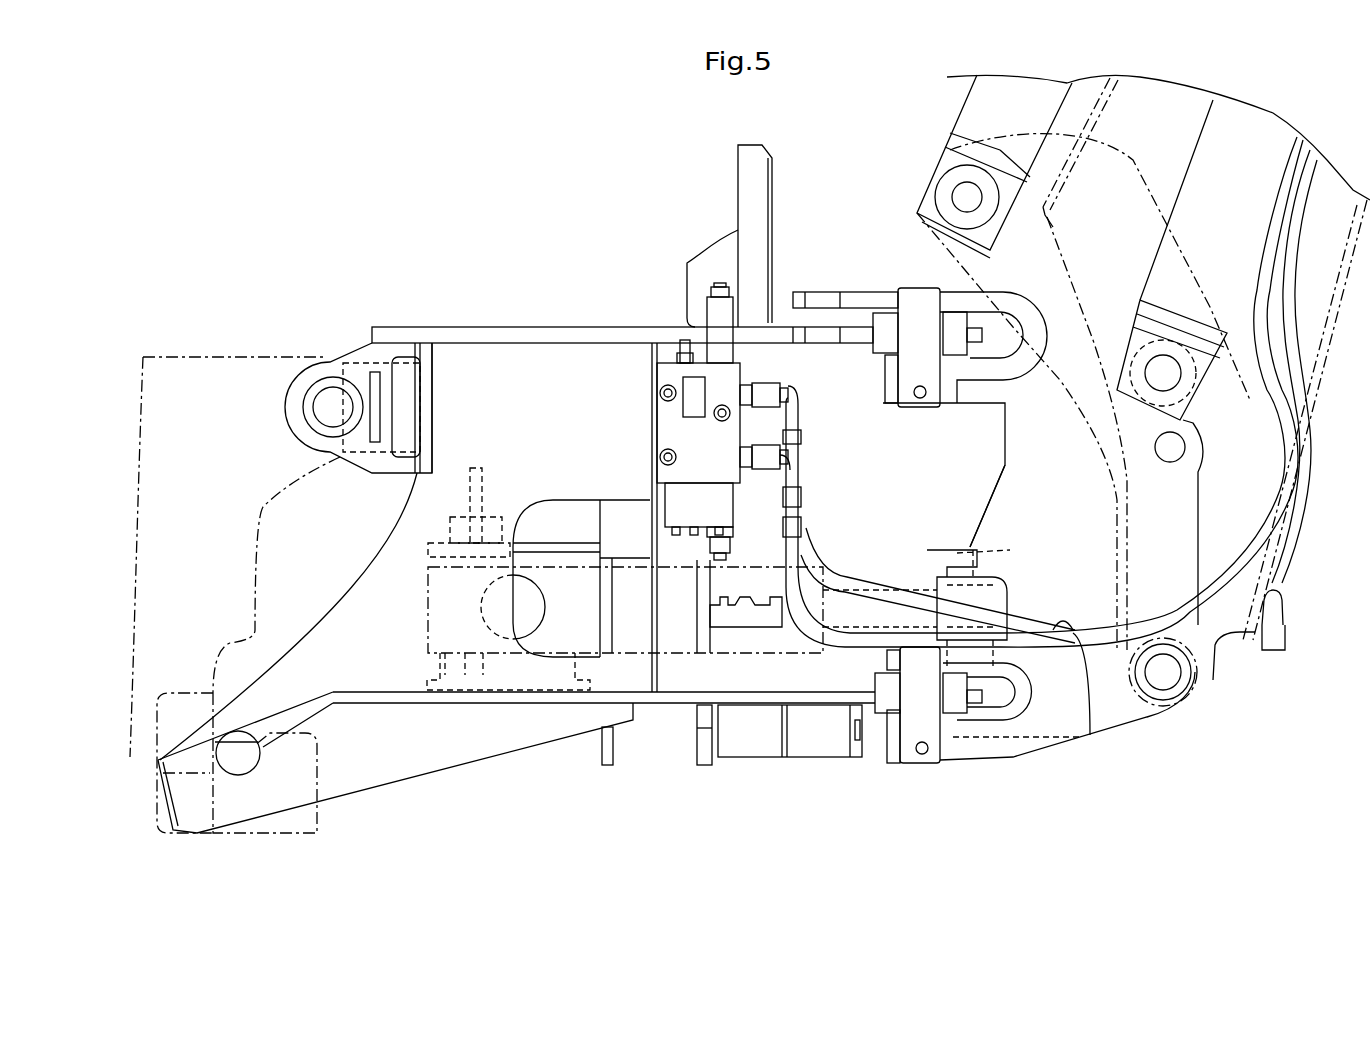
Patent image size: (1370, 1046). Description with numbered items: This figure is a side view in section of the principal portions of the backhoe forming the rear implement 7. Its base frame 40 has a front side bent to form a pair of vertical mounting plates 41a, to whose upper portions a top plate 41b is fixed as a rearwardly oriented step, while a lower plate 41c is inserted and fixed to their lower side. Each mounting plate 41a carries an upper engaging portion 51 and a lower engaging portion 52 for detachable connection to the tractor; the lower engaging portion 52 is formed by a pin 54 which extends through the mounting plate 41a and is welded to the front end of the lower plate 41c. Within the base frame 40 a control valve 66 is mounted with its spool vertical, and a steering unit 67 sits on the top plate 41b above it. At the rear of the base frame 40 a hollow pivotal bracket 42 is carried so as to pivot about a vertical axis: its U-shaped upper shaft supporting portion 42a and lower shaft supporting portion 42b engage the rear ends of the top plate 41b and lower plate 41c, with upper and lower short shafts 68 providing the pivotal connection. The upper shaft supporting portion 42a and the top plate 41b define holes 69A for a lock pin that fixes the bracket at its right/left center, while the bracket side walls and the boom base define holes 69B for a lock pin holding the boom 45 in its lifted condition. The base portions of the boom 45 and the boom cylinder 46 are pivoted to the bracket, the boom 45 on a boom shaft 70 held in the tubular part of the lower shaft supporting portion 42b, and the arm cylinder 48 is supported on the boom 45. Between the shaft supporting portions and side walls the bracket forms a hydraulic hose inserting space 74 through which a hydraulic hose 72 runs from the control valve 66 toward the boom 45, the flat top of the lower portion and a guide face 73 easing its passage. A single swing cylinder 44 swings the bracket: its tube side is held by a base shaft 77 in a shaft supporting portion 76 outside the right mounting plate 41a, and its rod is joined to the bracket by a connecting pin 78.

The rear implement 7 is at (744, 213).
The base frame 40 is at (565, 764).
The mounting plates 41a is at (452, 363).
The top plate 41b is at (505, 333).
The lower plate 41c is at (403, 700).
The pivotal bracket 42 is at (1006, 559).
The upper shaft supporting portion 42a is at (1013, 367).
The lower shaft supporting portion 42b is at (1072, 713).
The swing cylinder 44 is at (753, 653).
The boom 45 is at (1270, 660).
The boom cylinder 46 is at (1207, 143).
The arm cylinder 48 is at (967, 117).
The upper engaging portion 51 is at (337, 345).
The lower engaging portion 52 is at (261, 792).
The pin 54 is at (237, 765).
The control valve 66 is at (693, 437).
The steering unit 67 is at (788, 224).
The short shafts 68 is at (937, 750).
The holes 69A is at (807, 332).
The holes 69B is at (1170, 460).
The boom shaft 70 is at (1170, 680).
The hydraulic hose 72 is at (1020, 623).
The guide face 73 is at (1073, 633).
The hydraulic hose inserting space 74 is at (1050, 480).
The shaft supporting portion 76 is at (553, 545).
The base shaft 77 is at (490, 520).
The connecting pin 78 is at (977, 553).